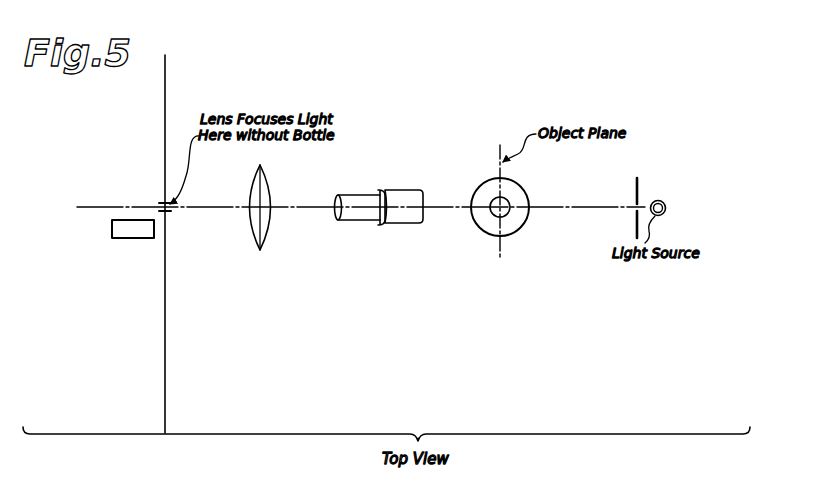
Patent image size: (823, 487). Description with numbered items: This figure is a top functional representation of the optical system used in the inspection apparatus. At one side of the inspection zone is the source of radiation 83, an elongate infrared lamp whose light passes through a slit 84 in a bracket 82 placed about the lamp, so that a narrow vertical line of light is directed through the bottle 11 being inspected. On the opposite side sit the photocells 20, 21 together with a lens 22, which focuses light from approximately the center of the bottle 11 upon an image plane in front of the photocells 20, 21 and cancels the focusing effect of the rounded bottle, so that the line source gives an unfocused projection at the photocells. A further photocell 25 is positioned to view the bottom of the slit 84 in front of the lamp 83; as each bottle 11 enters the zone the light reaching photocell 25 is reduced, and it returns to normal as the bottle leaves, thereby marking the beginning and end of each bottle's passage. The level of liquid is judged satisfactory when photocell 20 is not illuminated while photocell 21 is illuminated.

The bottle 11 is at (486, 232).
The photocell 20 is at (92, 255).
The photocell 21 is at (147, 244).
The lens 22 is at (257, 247).
The photocell 25 is at (384, 228).
The bracket 82 is at (635, 192).
The source of radiation 83 is at (663, 204).
The slit 84 is at (633, 211).